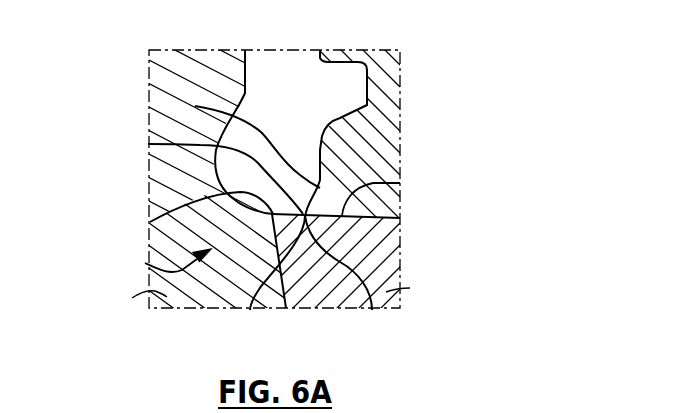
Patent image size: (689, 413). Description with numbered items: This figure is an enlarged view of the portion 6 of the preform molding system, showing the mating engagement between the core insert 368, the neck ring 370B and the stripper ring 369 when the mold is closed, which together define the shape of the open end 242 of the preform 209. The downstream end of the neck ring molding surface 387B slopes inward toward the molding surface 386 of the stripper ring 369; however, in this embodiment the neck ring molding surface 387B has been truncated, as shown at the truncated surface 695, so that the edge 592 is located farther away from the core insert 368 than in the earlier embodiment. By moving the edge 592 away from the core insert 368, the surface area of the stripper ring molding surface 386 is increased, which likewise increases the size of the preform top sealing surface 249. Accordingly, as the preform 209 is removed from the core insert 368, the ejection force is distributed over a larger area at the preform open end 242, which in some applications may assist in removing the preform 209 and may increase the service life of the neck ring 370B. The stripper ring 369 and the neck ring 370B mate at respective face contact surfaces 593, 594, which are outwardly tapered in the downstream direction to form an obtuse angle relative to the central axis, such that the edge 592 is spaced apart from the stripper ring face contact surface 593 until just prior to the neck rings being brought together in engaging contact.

The preform 209 is at (268, 65).
The neck ring 370B is at (385, 70).
The neck ring molding surface 387B is at (195, 106).
The truncated surface 695 is at (148, 144).
The stripper ring molding surface 386 is at (150, 222).
The open end 242 is at (145, 263).
The core insert 368 is at (132, 298).
The preform top sealing surface 249 is at (250, 310).
The edge 592 is at (372, 310).
The stripper ring face contact surface 593 is at (400, 183).
The neck ring face contact surface 594 is at (370, 218).
The stripper ring 369 is at (410, 288).
The portion 6 is at (400, 136).